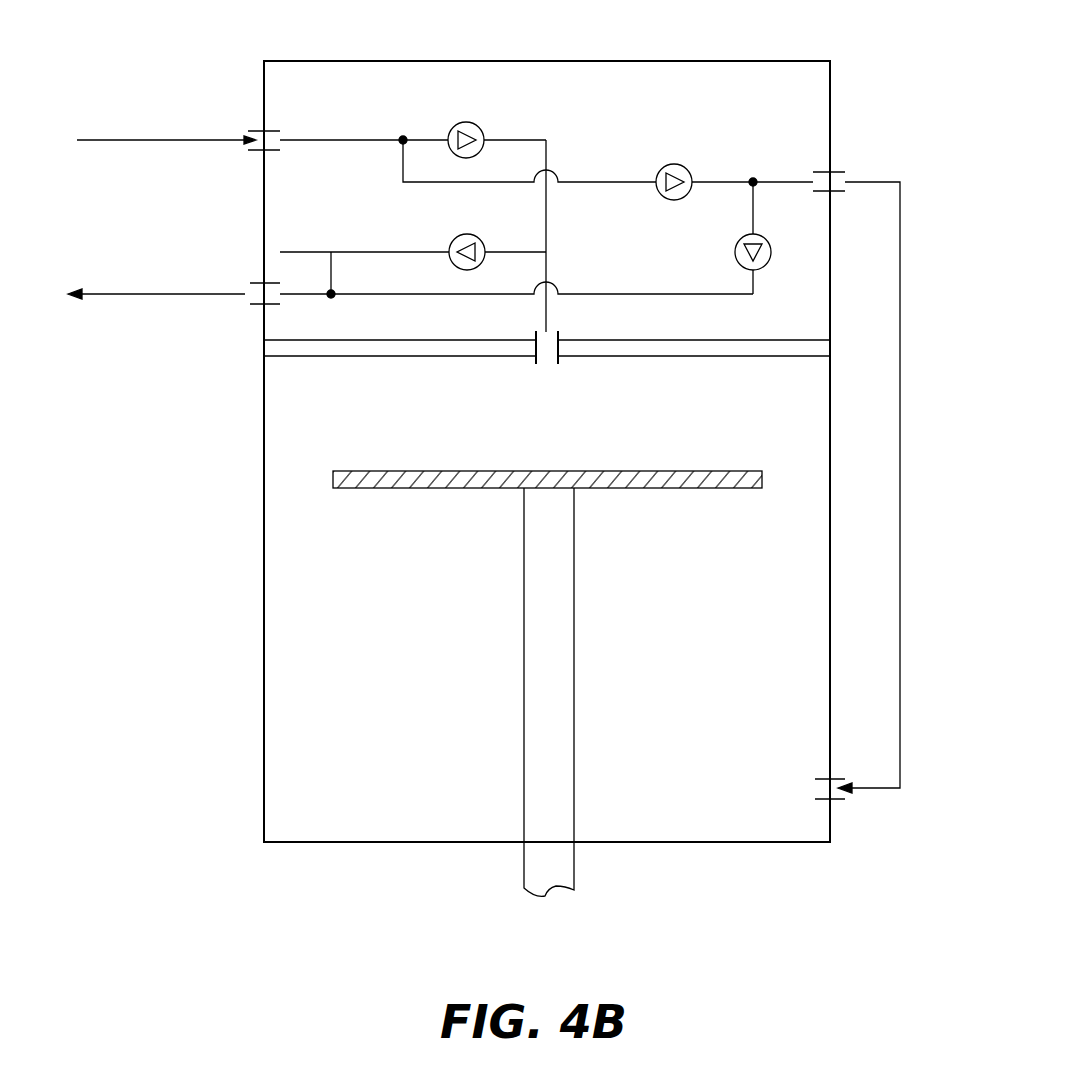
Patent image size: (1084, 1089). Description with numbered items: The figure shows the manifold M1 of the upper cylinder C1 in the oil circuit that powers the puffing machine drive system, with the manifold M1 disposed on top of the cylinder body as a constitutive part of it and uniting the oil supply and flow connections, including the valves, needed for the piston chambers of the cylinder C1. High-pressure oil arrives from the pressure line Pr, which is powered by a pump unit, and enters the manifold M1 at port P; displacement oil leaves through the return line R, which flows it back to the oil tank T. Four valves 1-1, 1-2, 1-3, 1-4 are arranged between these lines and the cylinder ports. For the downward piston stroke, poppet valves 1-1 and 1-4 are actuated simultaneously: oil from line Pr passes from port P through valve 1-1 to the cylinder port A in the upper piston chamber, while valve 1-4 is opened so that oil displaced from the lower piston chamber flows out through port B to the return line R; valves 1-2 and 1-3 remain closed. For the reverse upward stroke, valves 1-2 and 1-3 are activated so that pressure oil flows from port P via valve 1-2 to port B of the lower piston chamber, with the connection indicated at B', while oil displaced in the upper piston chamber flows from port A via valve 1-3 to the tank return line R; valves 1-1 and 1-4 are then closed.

The upper cylinder C1 is at (265, 539).
The manifold M1 is at (618, 50).
The cylinder port A is at (542, 368).
The high-pressure oil line Pr is at (166, 125).
The port P is at (254, 128).
The oil tank T is at (254, 280).
The return line R is at (156, 281).
The port B' is at (840, 154).
The port B is at (839, 764).
The poppet valve 1-1 is at (466, 125).
The valve 1-2 is at (674, 170).
The valve 1-3 is at (467, 238).
The poppet valve 1-4 is at (772, 238).